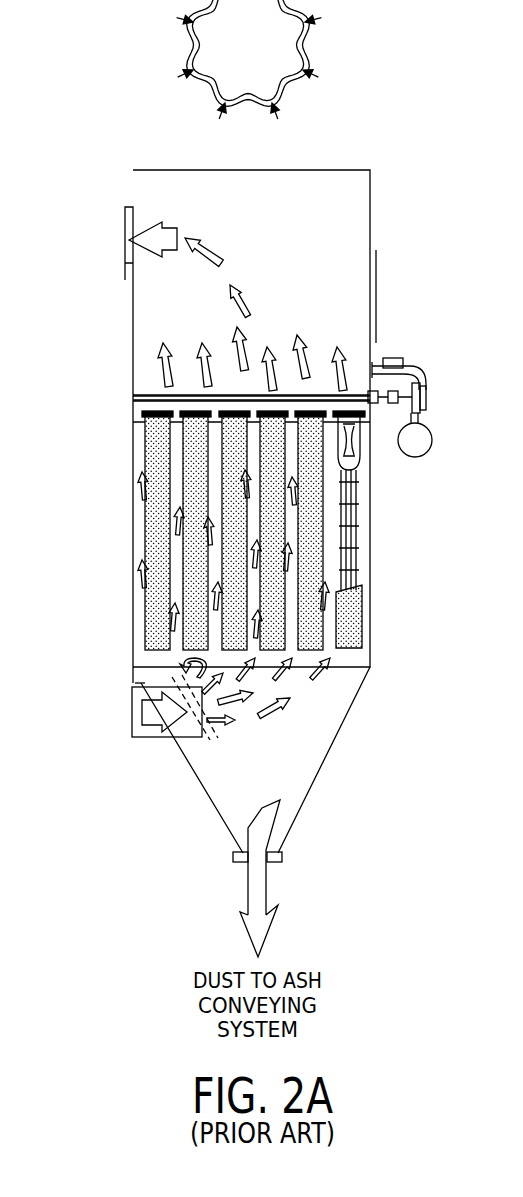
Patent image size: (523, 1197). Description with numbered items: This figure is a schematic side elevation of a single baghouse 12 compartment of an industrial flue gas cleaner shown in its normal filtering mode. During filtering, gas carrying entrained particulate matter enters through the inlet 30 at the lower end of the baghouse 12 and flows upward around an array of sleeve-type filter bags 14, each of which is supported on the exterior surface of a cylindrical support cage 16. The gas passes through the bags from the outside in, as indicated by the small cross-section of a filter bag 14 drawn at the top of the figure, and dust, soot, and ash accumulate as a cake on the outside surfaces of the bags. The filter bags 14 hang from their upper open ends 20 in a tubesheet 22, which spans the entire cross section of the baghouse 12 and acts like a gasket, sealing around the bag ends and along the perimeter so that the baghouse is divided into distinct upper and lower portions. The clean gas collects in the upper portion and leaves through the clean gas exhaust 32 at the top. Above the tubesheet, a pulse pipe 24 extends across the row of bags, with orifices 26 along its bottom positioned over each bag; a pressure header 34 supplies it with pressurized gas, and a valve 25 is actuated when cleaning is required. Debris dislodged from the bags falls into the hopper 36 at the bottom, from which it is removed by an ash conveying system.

The baghouse 12 is at (82, 172).
The filter bags 14 is at (313, 43).
The support cages 16 is at (350, 575).
The upper open ends 20 is at (142, 434).
The tubesheet 22 is at (136, 417).
The pulse pipes 24 is at (353, 396).
The valve 25 is at (428, 410).
The orifices 26 is at (152, 400).
The inlet 30 is at (126, 745).
The clean gas exhaust 32 is at (109, 196).
The pressure header 34 is at (415, 448).
The hopper 36 is at (290, 788).